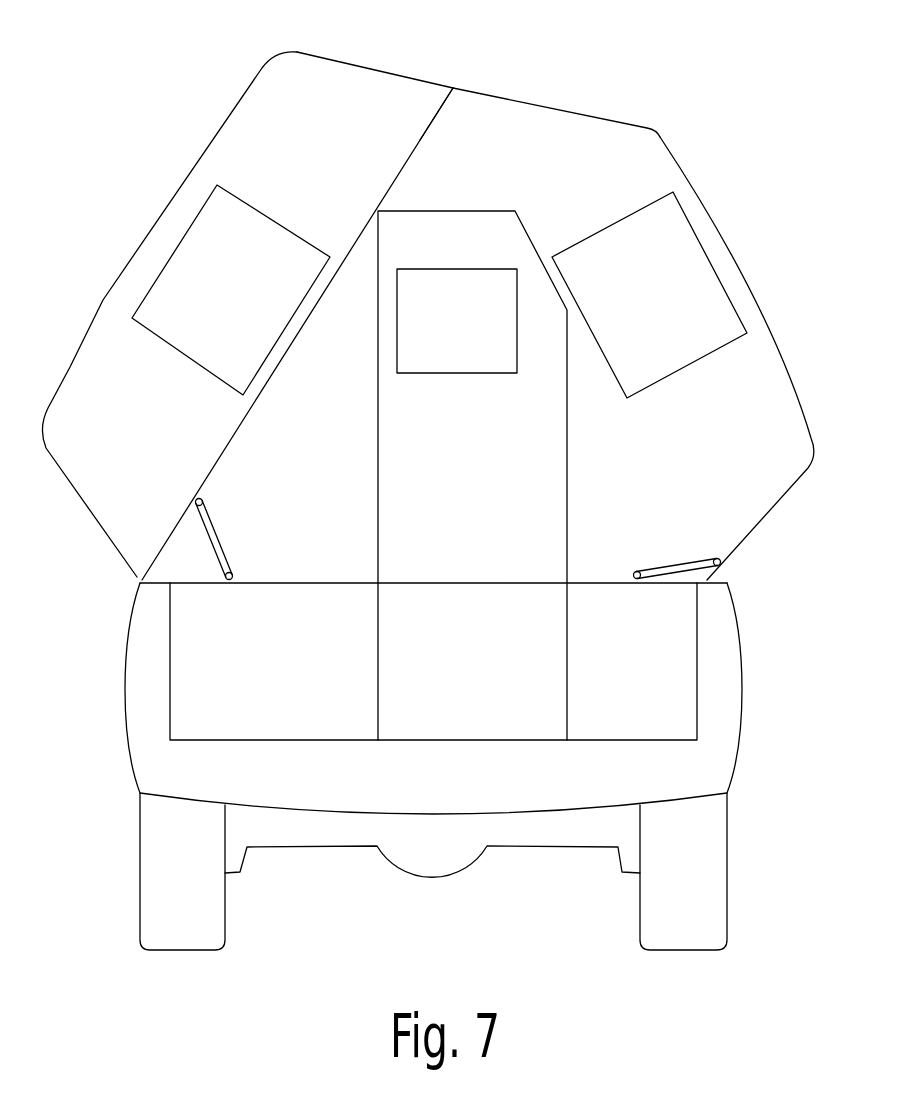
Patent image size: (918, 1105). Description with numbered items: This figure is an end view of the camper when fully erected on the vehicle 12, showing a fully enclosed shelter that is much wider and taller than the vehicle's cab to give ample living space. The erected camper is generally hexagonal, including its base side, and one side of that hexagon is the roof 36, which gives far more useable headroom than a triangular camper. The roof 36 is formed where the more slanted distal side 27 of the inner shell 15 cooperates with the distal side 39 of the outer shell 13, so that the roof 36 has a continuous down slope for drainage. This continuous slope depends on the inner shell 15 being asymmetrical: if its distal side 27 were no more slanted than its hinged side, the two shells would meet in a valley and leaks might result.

The vehicle 12 is at (745, 683).
The outer shell 13 is at (150, 233).
The inner shell 15 is at (750, 293).
The distal side of inner shell 27 is at (540, 106).
The roof 36 is at (471, 91).
The distal side of outer shell 39 is at (381, 70).